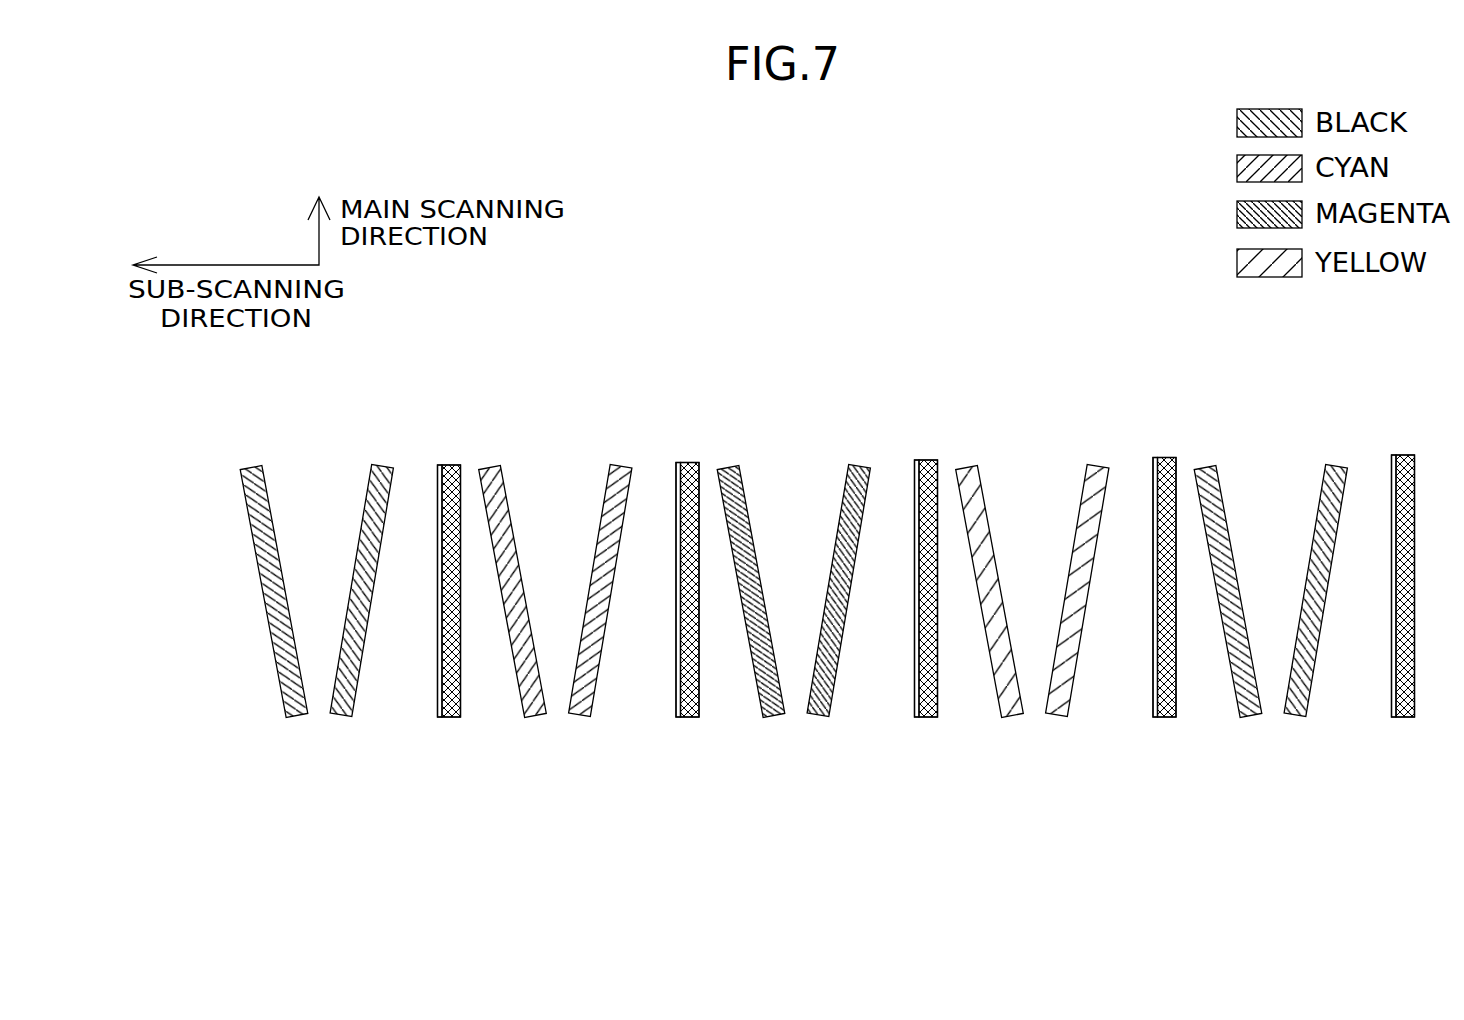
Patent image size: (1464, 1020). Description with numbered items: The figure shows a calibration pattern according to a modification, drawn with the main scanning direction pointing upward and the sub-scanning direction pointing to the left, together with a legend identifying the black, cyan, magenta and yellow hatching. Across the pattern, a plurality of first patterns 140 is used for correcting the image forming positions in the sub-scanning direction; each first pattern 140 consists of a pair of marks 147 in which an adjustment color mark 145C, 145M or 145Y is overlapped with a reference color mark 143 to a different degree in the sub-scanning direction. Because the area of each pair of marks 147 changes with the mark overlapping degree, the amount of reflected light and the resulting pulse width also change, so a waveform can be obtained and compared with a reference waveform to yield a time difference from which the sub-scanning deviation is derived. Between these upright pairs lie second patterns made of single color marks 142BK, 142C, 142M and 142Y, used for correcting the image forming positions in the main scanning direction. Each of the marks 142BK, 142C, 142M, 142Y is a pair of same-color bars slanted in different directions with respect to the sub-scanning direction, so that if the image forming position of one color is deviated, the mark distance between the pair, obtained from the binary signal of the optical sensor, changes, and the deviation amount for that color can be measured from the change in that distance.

The first pattern 140 is at (916, 512).
The pair of marks 147 is at (474, 517).
The reference color mark 143 is at (438, 492).
The adjustment color mark (cyan) 145C is at (447, 465).
The adjustment color mark (magenta) 145M is at (686, 462).
The adjustment color mark (yellow) 145Y is at (924, 460).
The single color mark (black) 142BK is at (297, 718).
The single color mark (cyan) 142C is at (536, 718).
The single color mark (magenta) 142M is at (774, 718).
The single color mark (yellow) 142Y is at (1012, 718).